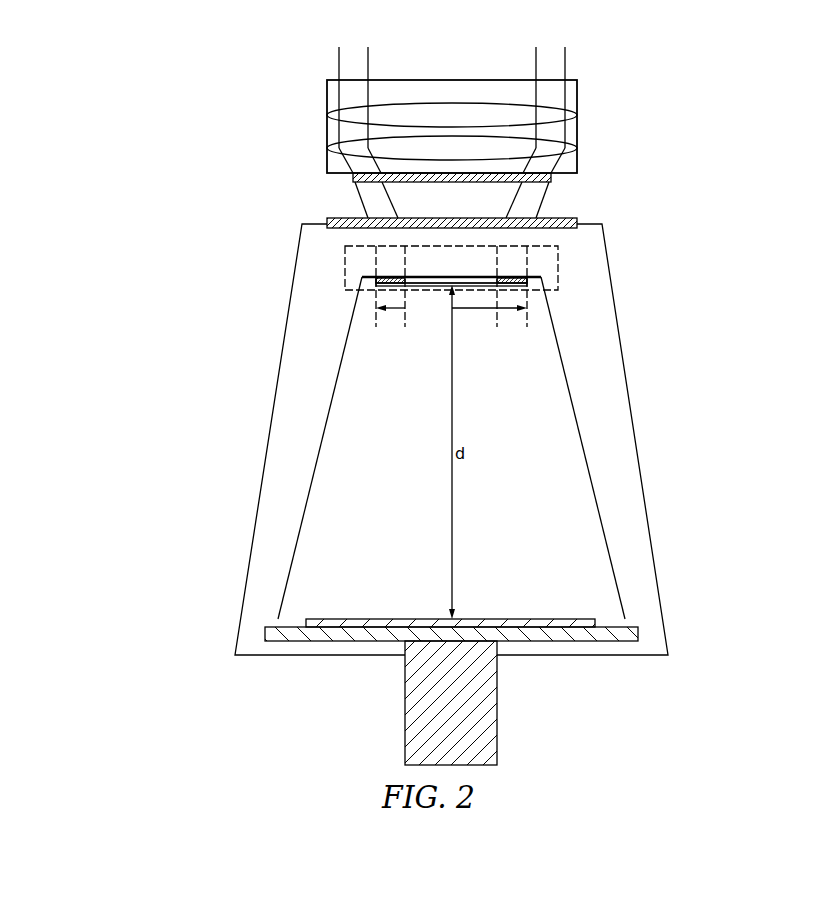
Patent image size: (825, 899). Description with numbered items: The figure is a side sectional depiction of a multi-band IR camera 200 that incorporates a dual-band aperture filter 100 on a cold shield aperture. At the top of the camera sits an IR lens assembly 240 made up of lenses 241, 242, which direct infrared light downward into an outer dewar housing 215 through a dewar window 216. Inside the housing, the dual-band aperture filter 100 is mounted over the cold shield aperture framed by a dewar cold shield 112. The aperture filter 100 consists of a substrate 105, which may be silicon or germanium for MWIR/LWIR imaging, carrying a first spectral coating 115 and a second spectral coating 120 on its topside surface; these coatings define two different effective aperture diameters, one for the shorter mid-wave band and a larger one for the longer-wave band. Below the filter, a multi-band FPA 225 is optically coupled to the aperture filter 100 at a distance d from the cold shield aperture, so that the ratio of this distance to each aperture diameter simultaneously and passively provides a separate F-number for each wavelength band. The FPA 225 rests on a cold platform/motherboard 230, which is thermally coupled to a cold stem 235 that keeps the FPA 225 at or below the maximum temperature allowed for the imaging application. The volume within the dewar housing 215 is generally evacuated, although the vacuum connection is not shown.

The IR camera 200 is at (250, 107).
The IR lens assembly 240 is at (587, 130).
The lens 241 is at (507, 115).
The lens 242 is at (434, 147).
The dewar window 216 is at (327, 219).
The dewar housing 215 is at (283, 359).
The cold shield 112 is at (350, 338).
The dual-band aperture filter 100 is at (558, 248).
The first spectral coating 115 is at (498, 277).
The second spectral coating 120 is at (378, 279).
The substrate 105 is at (520, 287).
The multi-band FPA 225 is at (307, 622).
The cold platform/motherboard 230 is at (266, 636).
The cold stem 235 is at (497, 708).